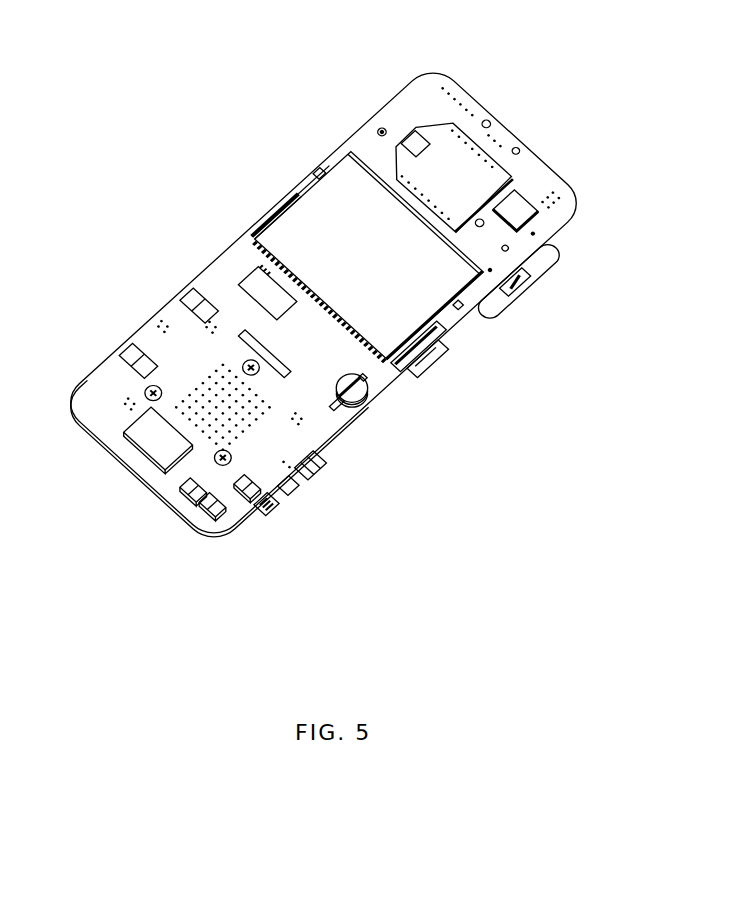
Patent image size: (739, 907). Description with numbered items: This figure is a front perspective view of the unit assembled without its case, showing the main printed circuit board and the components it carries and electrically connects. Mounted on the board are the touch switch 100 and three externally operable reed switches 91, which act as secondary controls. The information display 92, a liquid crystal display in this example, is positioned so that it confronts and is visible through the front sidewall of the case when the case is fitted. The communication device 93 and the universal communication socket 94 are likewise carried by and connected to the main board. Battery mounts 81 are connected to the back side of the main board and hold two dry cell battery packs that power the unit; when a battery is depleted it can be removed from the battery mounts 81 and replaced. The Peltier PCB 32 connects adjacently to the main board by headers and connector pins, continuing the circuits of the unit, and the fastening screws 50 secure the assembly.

The Peltier PCB 32 is at (320, 470).
The screws 50 is at (246, 374).
The battery mounts 81 is at (440, 362).
The reed switches 91 is at (270, 212).
The information display 92 is at (333, 167).
The communication device 93 is at (492, 182).
The universal communication socket 94 is at (432, 123).
The touch switch 100 is at (243, 293).